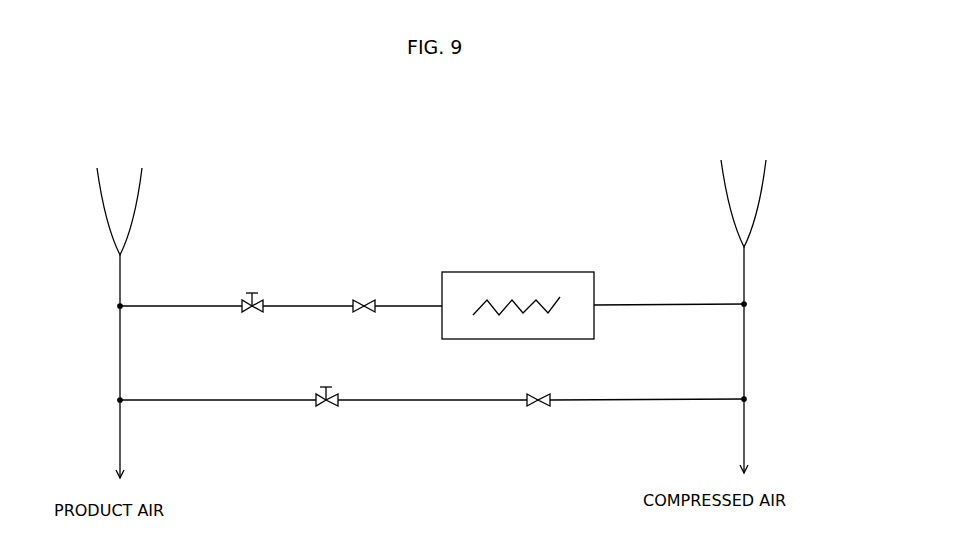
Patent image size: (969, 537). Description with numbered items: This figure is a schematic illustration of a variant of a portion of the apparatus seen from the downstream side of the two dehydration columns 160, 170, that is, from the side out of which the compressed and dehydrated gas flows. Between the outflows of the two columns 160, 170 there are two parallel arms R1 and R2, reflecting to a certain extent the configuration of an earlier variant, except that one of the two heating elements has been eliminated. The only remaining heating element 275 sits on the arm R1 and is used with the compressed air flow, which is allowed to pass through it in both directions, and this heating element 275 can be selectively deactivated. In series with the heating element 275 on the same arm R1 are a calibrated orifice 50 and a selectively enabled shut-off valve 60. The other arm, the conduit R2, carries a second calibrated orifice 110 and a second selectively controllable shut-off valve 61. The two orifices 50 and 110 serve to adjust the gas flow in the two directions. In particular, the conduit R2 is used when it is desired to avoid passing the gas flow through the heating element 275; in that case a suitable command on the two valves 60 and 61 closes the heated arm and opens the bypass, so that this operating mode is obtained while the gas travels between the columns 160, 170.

The column 160 is at (119, 202).
The column 170 is at (743, 194).
The shut-off valve 60 is at (252, 292).
The orifice 50 is at (364, 294).
The heating element 275 is at (518, 293).
The shut-off valve 61 is at (327, 410).
The orifice 110 is at (535, 414).
The arm R1 is at (432, 294).
The conduit R2 is at (432, 388).